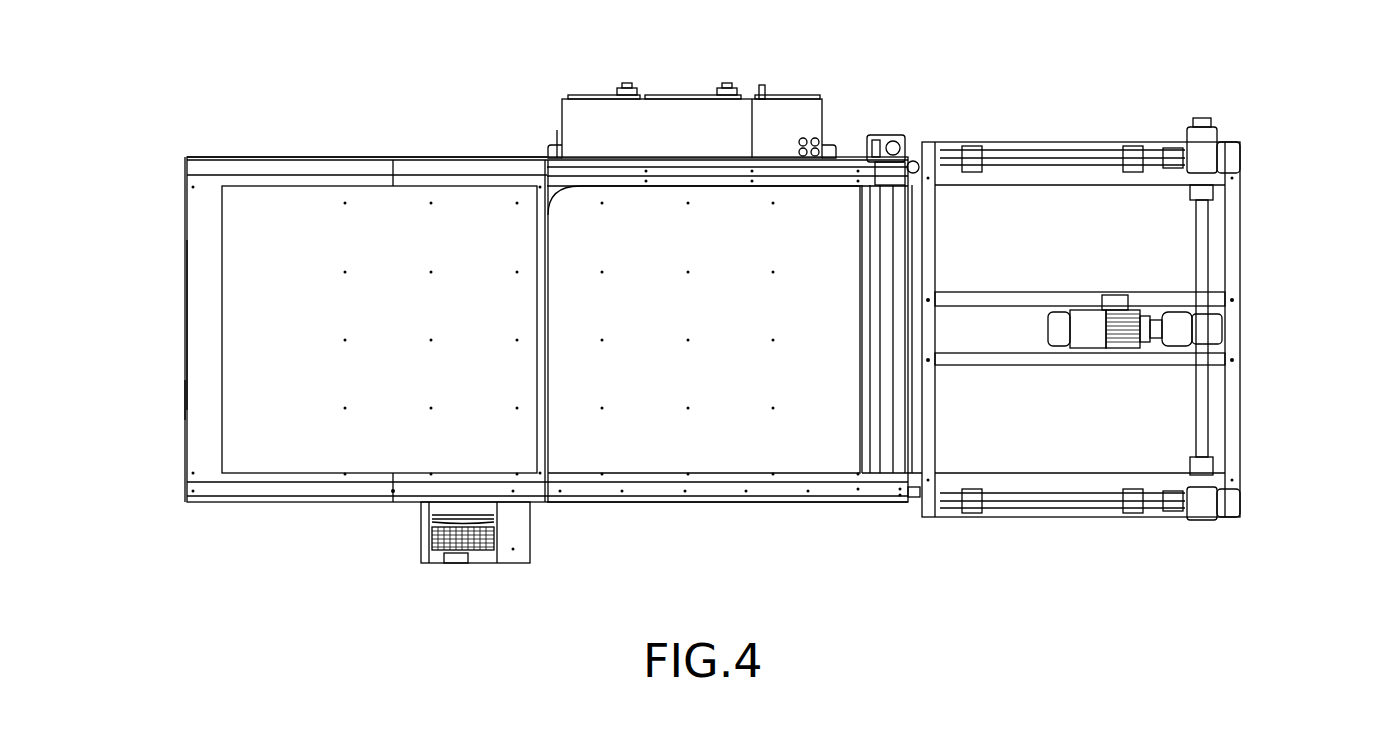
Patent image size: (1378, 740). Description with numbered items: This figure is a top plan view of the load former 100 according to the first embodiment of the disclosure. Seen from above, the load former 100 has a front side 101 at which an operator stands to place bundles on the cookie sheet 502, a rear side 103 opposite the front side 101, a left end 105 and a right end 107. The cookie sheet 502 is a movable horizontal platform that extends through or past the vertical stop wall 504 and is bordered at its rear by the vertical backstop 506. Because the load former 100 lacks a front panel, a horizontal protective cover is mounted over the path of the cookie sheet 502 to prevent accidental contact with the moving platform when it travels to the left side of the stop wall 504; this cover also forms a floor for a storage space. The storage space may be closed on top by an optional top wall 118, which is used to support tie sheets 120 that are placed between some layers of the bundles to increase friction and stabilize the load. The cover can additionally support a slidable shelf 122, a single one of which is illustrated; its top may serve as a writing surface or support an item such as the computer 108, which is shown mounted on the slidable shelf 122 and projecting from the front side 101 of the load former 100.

The load former 100 is at (1268, 166).
The front side 101 is at (355, 515).
The rear side 103 is at (408, 140).
The left end 105 is at (162, 325).
The right end 107 is at (948, 240).
The computer 108 is at (483, 557).
The top wall 118 is at (187, 387).
The tie sheets 120 is at (252, 262).
The slidable shelf 122 is at (520, 525).
The cookie sheet 502 is at (755, 447).
The stop wall 504 is at (548, 372).
The backstop 506 is at (695, 185).